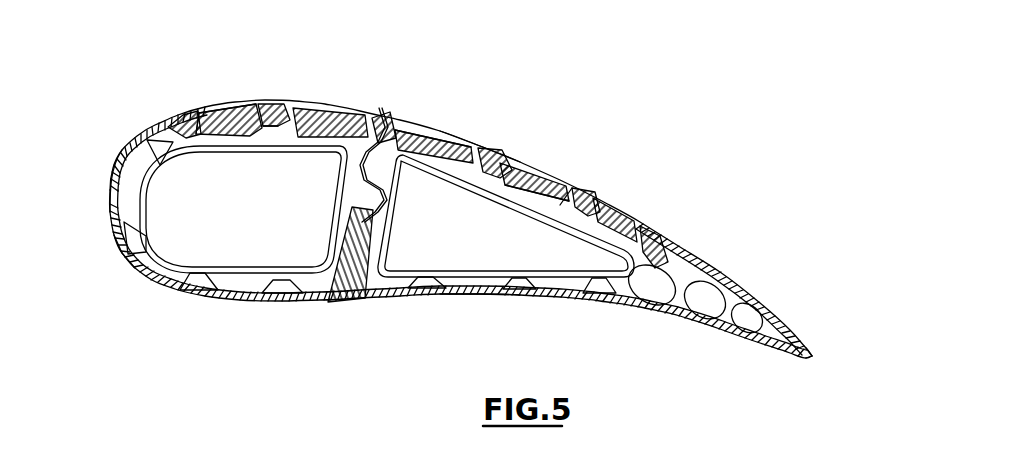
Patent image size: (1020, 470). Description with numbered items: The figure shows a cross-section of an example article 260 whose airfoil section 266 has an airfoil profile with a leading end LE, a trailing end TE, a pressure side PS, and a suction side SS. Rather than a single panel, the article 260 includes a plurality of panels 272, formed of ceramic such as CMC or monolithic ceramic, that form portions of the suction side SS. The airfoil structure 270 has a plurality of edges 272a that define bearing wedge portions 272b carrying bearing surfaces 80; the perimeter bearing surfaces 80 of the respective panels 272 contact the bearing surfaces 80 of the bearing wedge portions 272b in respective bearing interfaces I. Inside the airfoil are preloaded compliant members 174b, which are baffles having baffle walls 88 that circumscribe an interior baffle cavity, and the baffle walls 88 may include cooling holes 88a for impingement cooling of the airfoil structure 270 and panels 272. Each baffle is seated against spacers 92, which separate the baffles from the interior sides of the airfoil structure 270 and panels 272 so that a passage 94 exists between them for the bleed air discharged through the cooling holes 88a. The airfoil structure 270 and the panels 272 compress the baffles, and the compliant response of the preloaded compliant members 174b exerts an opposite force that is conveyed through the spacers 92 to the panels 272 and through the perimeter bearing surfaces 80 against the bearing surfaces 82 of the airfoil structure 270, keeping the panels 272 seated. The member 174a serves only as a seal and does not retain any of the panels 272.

The article 260 is at (407, 338).
The preloaded compliant members 174b is at (172, 133).
The airfoil structure 270 is at (548, 305).
The airfoil section 266 is at (122, 268).
The leading end LE is at (96, 235).
The trailing end TE is at (815, 332).
The pressure side PS is at (481, 315).
The suction side SS is at (490, 108).
The baffle walls 88 is at (168, 172).
The cooling holes 88a is at (148, 218).
The member 174a is at (401, 162).
The spacers 92 is at (217, 146).
The passage 94 is at (392, 285).
The bearing surfaces 82 is at (185, 130).
The bearing surfaces 80 is at (203, 112).
The panels 272 is at (224, 104).
The edges 272a is at (247, 96).
The bearing wedge portions 272b is at (263, 105).
The bearing interfaces I is at (266, 145).